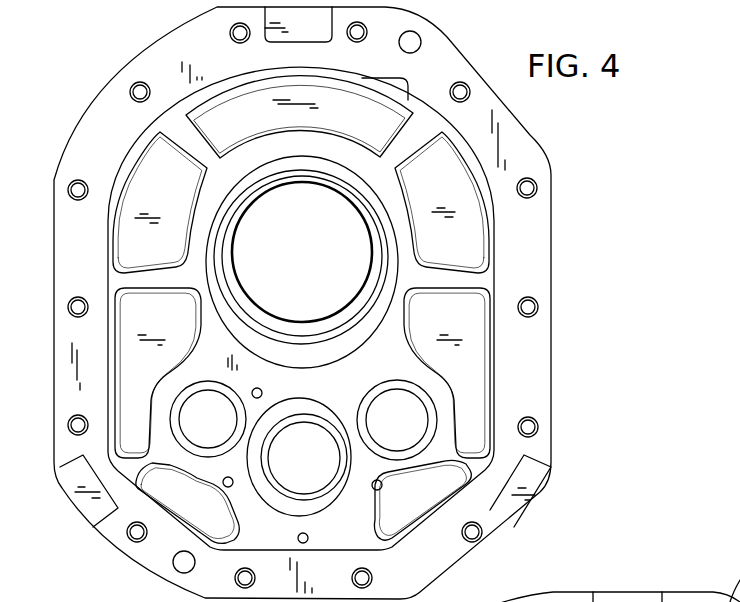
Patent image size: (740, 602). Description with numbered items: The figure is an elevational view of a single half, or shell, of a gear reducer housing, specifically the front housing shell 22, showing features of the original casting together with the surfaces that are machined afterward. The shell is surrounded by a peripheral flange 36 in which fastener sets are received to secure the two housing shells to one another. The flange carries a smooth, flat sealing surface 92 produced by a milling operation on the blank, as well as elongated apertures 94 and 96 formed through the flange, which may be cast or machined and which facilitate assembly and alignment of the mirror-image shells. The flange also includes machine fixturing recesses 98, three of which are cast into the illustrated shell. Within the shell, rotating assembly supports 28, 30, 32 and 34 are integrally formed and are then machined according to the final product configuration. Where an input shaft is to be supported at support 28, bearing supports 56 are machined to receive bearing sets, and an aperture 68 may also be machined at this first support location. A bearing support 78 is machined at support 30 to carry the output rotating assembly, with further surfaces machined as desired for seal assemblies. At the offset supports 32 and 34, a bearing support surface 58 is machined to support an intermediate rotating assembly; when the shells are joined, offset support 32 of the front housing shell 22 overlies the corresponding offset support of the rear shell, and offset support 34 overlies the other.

The front housing shell 22 is at (580, 318).
The rotating assembly support 28 is at (306, 511).
The rotating assembly support 30 is at (402, 232).
The offset support 32 is at (443, 400).
The offset support 34 is at (163, 396).
The peripheral flange 36 is at (533, 241).
The bearing support 56 is at (278, 470).
The bearing support surface 58 is at (398, 394).
The aperture 68 is at (315, 467).
The bearing support 78 is at (352, 182).
The sealing surface 92 is at (95, 128).
The aperture 94 is at (137, 88).
The aperture 96 is at (232, 33).
The machine fixturing recess 98 is at (280, 32).